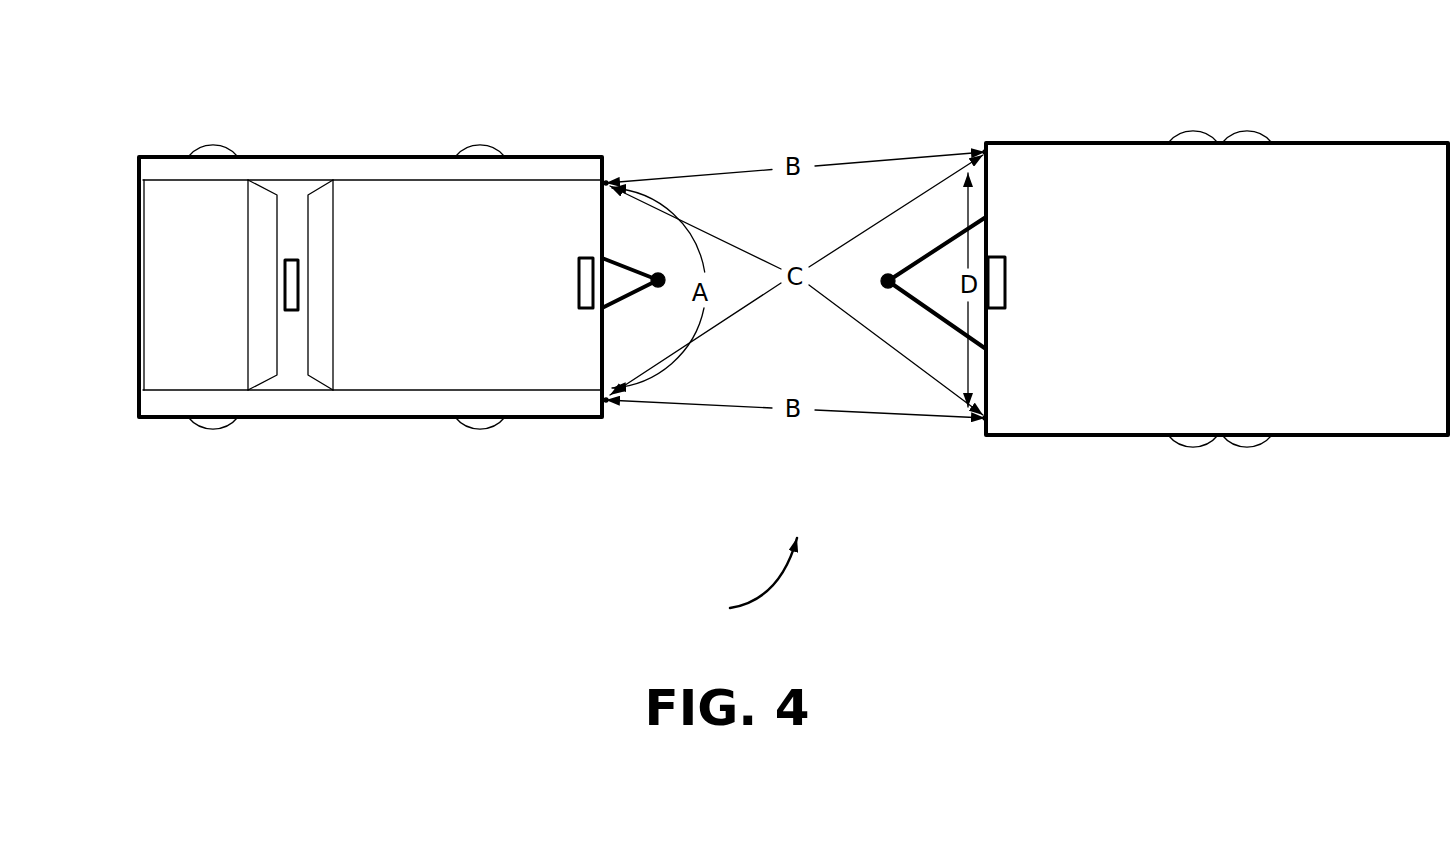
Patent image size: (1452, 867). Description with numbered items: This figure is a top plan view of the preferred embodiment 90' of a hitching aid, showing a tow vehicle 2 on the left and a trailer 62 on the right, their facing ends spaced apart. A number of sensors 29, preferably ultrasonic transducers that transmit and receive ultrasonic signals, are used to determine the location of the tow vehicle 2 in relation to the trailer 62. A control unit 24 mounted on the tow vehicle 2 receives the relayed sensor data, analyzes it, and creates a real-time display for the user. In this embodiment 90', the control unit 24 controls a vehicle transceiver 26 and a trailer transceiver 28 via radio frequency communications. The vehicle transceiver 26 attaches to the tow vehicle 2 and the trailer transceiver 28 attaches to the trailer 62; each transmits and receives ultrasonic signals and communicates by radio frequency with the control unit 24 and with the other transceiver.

The tow vehicle 2 is at (335, 406).
The control unit 24 is at (288, 260).
The vehicle transceiver 26 is at (582, 257).
The trailer transceiver 28 is at (991, 256).
The sensors 29 is at (607, 181).
The trailer 62 is at (1152, 407).
The preferred embodiment 90' is at (734, 580).